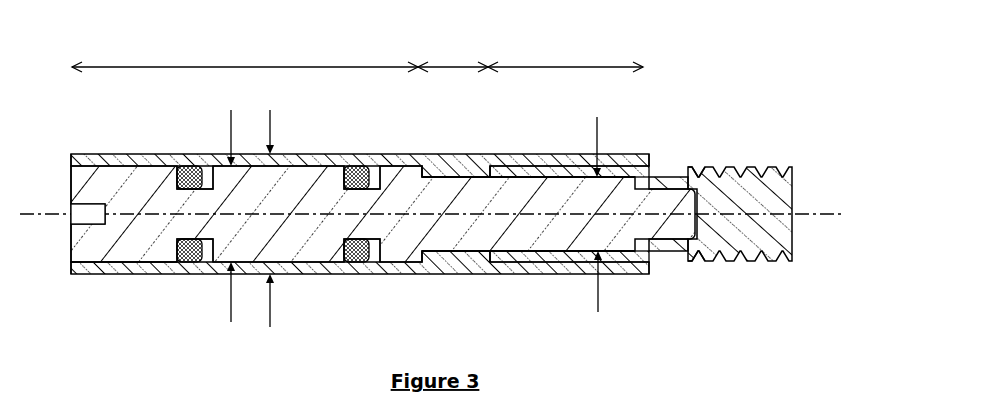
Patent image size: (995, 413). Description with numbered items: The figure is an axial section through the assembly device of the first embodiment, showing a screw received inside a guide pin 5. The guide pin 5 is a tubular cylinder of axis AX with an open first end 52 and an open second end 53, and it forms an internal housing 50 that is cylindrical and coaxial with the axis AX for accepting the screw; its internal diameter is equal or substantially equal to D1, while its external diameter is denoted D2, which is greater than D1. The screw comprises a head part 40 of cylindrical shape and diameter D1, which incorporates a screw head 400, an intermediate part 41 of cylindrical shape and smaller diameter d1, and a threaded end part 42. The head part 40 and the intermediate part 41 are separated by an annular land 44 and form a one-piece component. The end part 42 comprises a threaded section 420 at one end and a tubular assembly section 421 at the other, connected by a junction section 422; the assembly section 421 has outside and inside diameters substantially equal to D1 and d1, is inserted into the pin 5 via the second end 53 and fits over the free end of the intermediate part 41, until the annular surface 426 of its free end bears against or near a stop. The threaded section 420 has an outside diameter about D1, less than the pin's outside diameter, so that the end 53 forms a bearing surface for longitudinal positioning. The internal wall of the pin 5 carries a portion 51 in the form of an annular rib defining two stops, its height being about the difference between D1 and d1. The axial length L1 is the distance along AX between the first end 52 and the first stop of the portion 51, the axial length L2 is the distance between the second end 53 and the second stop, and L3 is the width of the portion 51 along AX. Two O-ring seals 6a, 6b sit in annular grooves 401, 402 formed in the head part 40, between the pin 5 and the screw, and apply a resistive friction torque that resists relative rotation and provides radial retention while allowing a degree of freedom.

The guide pin 5 is at (306, 160).
The O-ring seal 6a is at (194, 170).
The O-ring seal 6b is at (358, 170).
The head part 40 is at (323, 243).
The intermediate part 41 is at (575, 238).
The threaded end part 42 is at (725, 190).
The annular land 44 is at (423, 174).
The internal housing 50 is at (119, 260).
The stop portion 51 is at (462, 254).
The open first end 52 is at (61, 185).
The open second end 53 is at (657, 155).
The screw head 400 is at (86, 237).
The annular groove 401 is at (202, 242).
The annular groove 402 is at (374, 246).
The threaded section 420 is at (740, 258).
The assembly section 421 is at (542, 176).
The junction section 422 is at (669, 250).
The annular surface 426 is at (492, 175).
The axis AX is at (820, 215).
The diameter D1 is at (233, 208).
The external diameter D2 is at (270, 210).
The diameter d1 is at (598, 205).
The axial length L1 is at (245, 60).
The axial length L2 is at (565, 60).
The axial length L3 is at (453, 59).